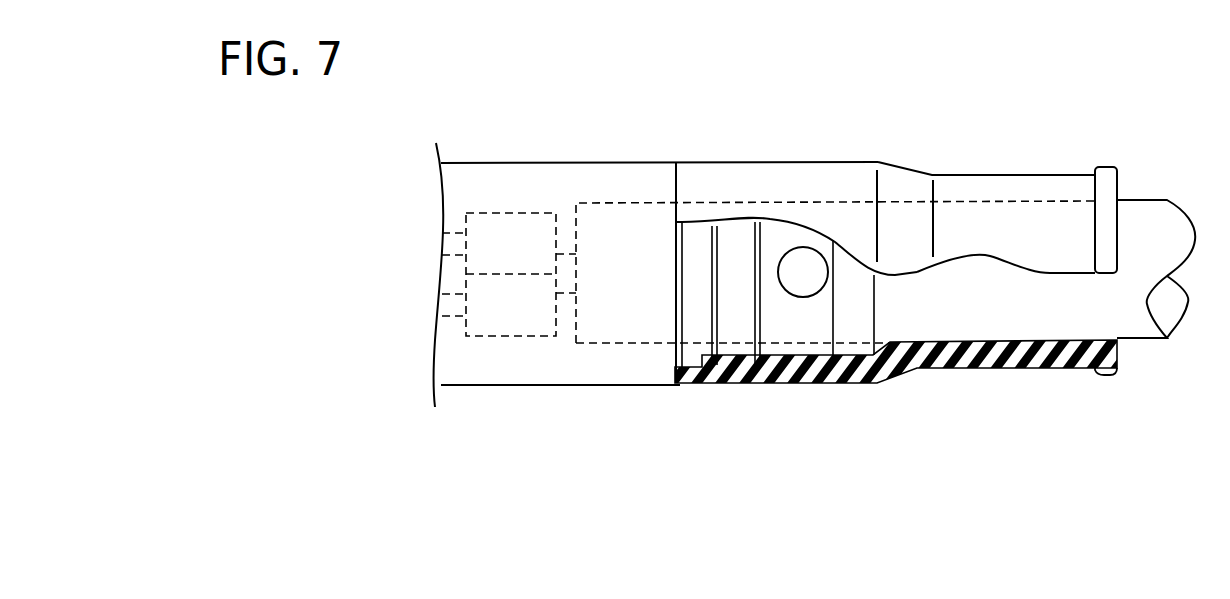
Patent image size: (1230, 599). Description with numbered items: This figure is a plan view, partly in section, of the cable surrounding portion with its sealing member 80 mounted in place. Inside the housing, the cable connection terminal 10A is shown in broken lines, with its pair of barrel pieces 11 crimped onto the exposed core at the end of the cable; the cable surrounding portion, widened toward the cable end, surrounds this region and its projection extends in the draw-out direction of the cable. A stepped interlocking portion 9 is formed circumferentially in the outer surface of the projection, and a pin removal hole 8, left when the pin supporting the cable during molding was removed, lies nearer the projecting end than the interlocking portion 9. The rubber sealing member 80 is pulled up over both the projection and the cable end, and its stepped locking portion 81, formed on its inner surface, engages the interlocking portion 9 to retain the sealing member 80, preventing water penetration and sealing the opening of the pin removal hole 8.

The cable connection terminal 10A is at (453, 316).
The barrel pieces 11 is at (513, 228).
The interlocking portion 9 is at (697, 368).
The locking portion 81 is at (733, 350).
The pin removal hole 8 is at (808, 280).
The sealing member 80 is at (1005, 175).